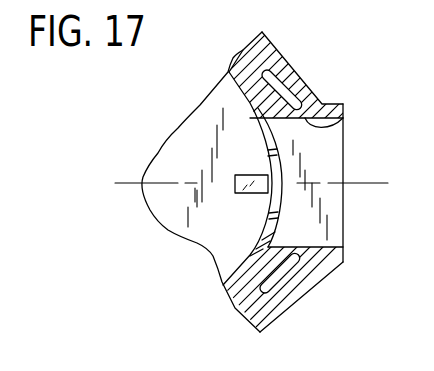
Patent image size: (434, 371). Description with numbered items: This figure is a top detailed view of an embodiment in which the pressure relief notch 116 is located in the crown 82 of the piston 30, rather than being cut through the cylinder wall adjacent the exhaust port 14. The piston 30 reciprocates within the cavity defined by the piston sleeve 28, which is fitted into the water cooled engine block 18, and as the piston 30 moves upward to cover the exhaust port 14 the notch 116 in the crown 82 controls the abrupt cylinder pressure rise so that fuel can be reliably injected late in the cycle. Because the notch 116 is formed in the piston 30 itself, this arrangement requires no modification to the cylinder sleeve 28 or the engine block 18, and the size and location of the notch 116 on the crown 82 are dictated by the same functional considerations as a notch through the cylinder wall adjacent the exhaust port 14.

The exhaust port 14 is at (338, 120).
The engine block 18 is at (122, 227).
The piston sleeve 28 is at (238, 86).
The piston 30 is at (180, 145).
The crown 82 is at (233, 238).
The pressure relief notch 116 is at (260, 176).